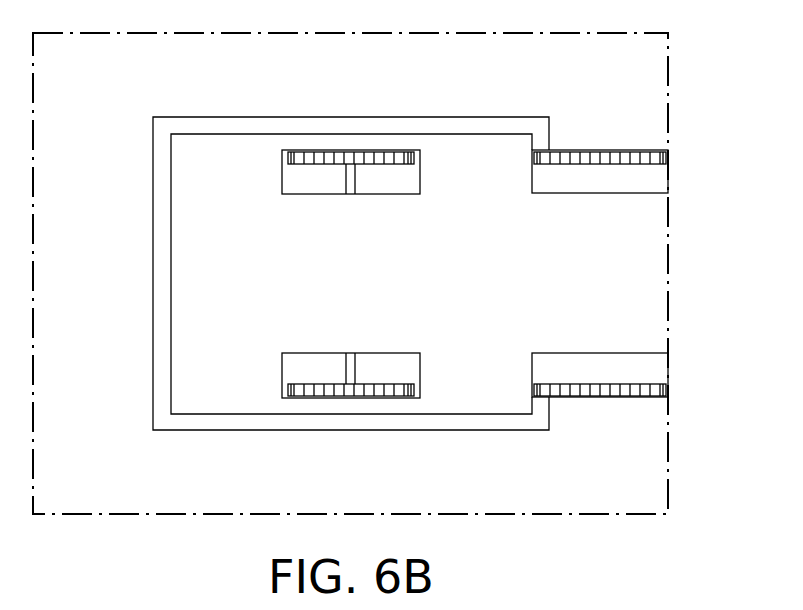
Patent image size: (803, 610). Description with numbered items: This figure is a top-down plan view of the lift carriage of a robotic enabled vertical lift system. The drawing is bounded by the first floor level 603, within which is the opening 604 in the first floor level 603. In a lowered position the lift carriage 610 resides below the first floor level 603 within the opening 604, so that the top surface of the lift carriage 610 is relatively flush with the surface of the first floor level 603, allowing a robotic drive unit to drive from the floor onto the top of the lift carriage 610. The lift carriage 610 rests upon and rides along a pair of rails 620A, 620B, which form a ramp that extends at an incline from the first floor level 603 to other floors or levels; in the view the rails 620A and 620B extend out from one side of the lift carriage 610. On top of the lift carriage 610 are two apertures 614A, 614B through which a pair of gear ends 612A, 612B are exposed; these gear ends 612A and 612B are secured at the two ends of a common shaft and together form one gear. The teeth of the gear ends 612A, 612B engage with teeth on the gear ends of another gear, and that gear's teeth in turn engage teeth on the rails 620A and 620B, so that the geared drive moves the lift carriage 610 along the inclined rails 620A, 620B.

The first floor level 603 is at (93, 76).
The opening 604 is at (283, 117).
The lift carriage 610 is at (202, 252).
The gear end 612A is at (414, 157).
The gear end 612B is at (414, 389).
The aperture 614A is at (370, 195).
The aperture 614B is at (370, 352).
The rail 620A is at (637, 176).
The rail 620B is at (637, 374).